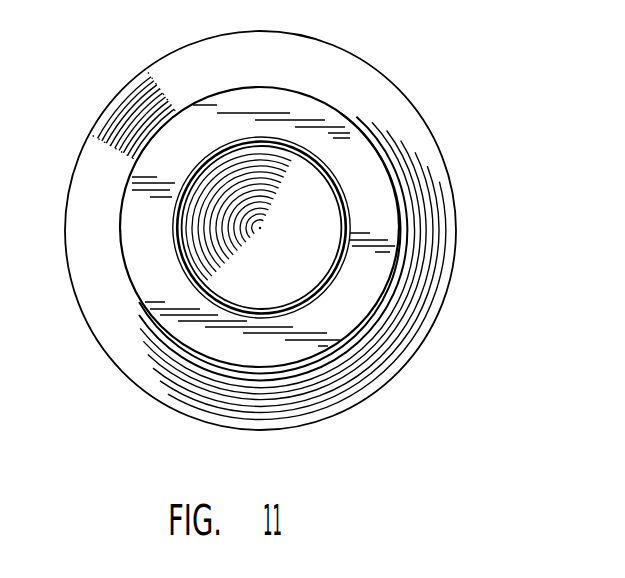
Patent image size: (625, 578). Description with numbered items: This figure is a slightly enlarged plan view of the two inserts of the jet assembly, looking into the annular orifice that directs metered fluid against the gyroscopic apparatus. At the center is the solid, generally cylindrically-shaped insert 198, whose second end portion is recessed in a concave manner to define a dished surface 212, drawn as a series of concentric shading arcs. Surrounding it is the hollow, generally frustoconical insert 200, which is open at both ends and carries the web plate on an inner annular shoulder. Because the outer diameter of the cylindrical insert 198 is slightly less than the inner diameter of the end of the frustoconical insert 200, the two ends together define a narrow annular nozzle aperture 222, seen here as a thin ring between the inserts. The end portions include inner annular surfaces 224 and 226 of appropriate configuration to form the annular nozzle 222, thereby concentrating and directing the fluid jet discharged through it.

The cylindrically-shaped insert 198 is at (268, 278).
The frustoconical insert 200 is at (355, 388).
The dished surface 212 is at (297, 224).
The annular nozzle aperture 222 is at (315, 163).
The inner annular surface 224 is at (343, 263).
The inner annular surface 226 is at (326, 285).